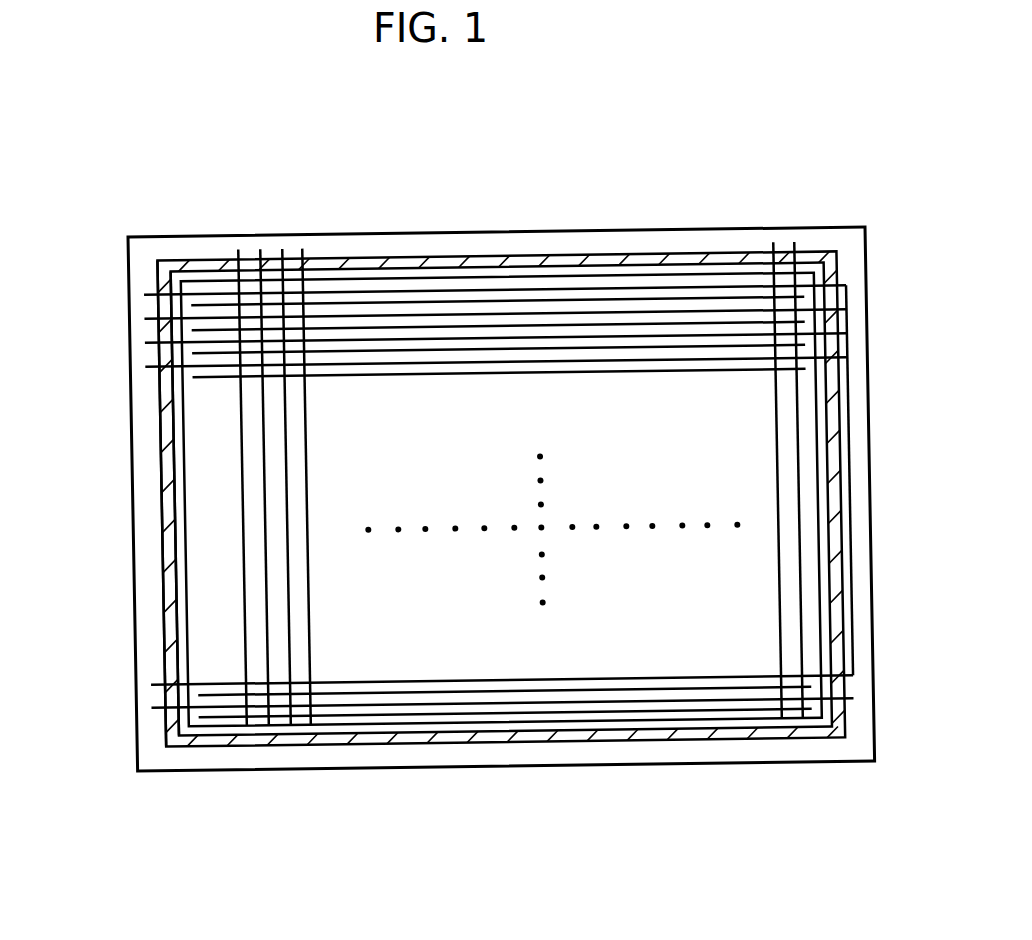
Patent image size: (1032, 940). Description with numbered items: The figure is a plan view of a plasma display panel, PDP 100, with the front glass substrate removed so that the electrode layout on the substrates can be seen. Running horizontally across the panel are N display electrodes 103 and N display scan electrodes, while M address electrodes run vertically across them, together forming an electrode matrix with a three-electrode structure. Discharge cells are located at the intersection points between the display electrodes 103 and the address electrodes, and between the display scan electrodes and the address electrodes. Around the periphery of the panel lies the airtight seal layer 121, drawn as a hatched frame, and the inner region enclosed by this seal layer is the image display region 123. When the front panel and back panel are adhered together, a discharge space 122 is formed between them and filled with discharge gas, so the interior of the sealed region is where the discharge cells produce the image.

The PDP 100 is at (871, 533).
The display electrodes 103 is at (195, 377).
The airtight seal layer 121 is at (482, 258).
The discharge space 122 is at (595, 403).
The image display region 123 is at (180, 518).